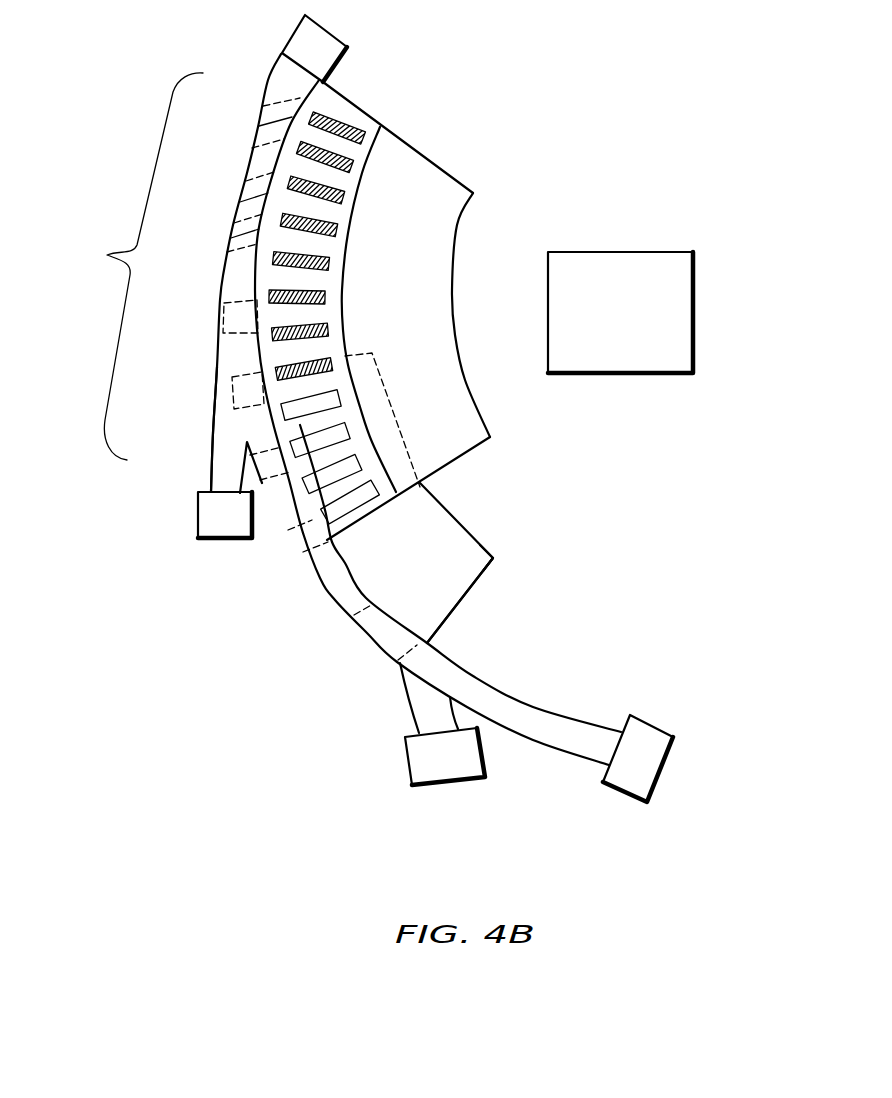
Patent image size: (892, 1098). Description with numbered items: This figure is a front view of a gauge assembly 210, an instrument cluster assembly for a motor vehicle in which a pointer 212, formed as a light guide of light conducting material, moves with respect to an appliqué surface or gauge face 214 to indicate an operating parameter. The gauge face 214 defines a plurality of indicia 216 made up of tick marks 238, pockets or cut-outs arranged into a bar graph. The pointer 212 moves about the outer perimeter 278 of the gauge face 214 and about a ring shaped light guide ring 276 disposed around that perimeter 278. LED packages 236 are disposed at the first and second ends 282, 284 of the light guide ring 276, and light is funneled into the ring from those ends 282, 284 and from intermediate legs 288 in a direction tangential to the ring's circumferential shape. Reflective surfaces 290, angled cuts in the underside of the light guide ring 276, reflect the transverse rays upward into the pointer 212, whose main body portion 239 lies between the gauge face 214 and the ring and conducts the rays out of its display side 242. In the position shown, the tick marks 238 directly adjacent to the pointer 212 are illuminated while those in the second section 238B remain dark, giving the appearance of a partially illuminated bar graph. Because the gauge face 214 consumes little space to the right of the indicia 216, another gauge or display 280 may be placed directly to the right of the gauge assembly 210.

The gauge assembly 210 is at (758, 158).
The pointer 212 is at (474, 566).
The gauge face 214 is at (437, 313).
The indicia 216 is at (396, 456).
The LED package 236 is at (222, 527).
The tick mark 238 is at (344, 112).
The second section of tick marks 238B is at (124, 266).
The main body portion 239 is at (466, 545).
The display side 242 is at (436, 594).
The light guide ring 276 is at (383, 633).
The outer perimeter 278 is at (250, 200).
The display 280 is at (641, 325).
The first end 282 is at (588, 698).
The second end 284 is at (262, 68).
The intermediate leg 288 is at (212, 453).
The reflective surface 290 is at (283, 106).